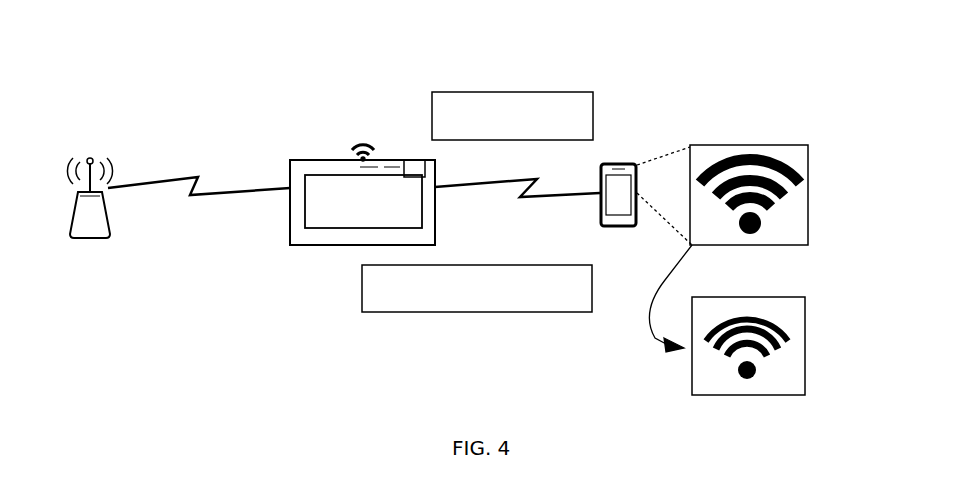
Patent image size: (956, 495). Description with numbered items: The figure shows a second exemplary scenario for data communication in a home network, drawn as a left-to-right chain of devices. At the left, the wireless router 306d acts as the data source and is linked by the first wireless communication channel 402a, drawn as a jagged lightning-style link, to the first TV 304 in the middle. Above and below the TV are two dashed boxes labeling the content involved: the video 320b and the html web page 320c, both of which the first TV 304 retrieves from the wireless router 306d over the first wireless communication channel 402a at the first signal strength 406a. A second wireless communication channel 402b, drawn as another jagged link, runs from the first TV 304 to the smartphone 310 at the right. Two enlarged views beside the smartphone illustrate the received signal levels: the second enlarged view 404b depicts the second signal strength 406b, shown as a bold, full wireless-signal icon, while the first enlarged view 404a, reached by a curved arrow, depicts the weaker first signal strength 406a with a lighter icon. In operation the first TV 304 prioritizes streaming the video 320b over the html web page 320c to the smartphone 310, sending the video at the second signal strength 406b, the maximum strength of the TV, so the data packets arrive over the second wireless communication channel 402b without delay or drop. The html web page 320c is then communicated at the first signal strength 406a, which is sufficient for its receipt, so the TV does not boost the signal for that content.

The wireless router 306d is at (100, 178).
The first wireless communication channel 402a is at (192, 180).
The first television (TV) 304 is at (312, 160).
The video 320b is at (512, 116).
The html web page 320c is at (477, 288).
The second wireless communication channel 402b is at (582, 190).
The smartphone 310 is at (630, 163).
The second enlarged view 404b is at (706, 145).
The second signal strength 406b is at (768, 160).
The first enlarged view 404a is at (705, 297).
The first signal strength 406a is at (760, 322).